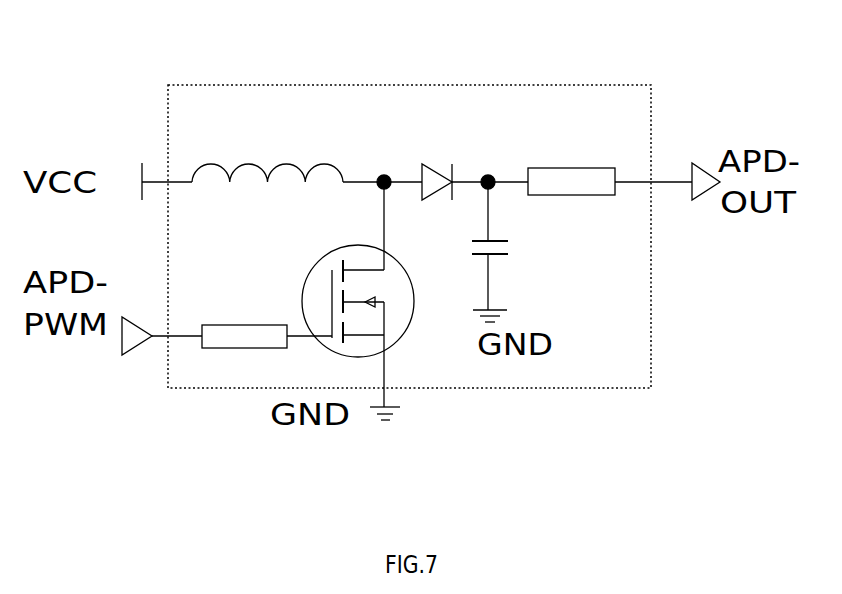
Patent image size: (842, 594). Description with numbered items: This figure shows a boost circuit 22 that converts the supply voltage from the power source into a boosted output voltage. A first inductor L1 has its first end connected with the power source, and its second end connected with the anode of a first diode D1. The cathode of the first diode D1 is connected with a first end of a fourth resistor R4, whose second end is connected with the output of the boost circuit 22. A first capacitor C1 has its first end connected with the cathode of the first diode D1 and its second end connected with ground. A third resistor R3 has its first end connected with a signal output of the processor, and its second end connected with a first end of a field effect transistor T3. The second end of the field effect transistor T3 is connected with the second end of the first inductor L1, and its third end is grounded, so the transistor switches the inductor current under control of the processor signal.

The boost circuit 22 is at (402, 86).
The first inductor L1 is at (267, 149).
The first diode D1 is at (434, 158).
The fourth resistor R4 is at (571, 156).
The first capacitor C1 is at (514, 246).
The third resistor R3 is at (244, 317).
The field effect transistor T3 is at (348, 294).